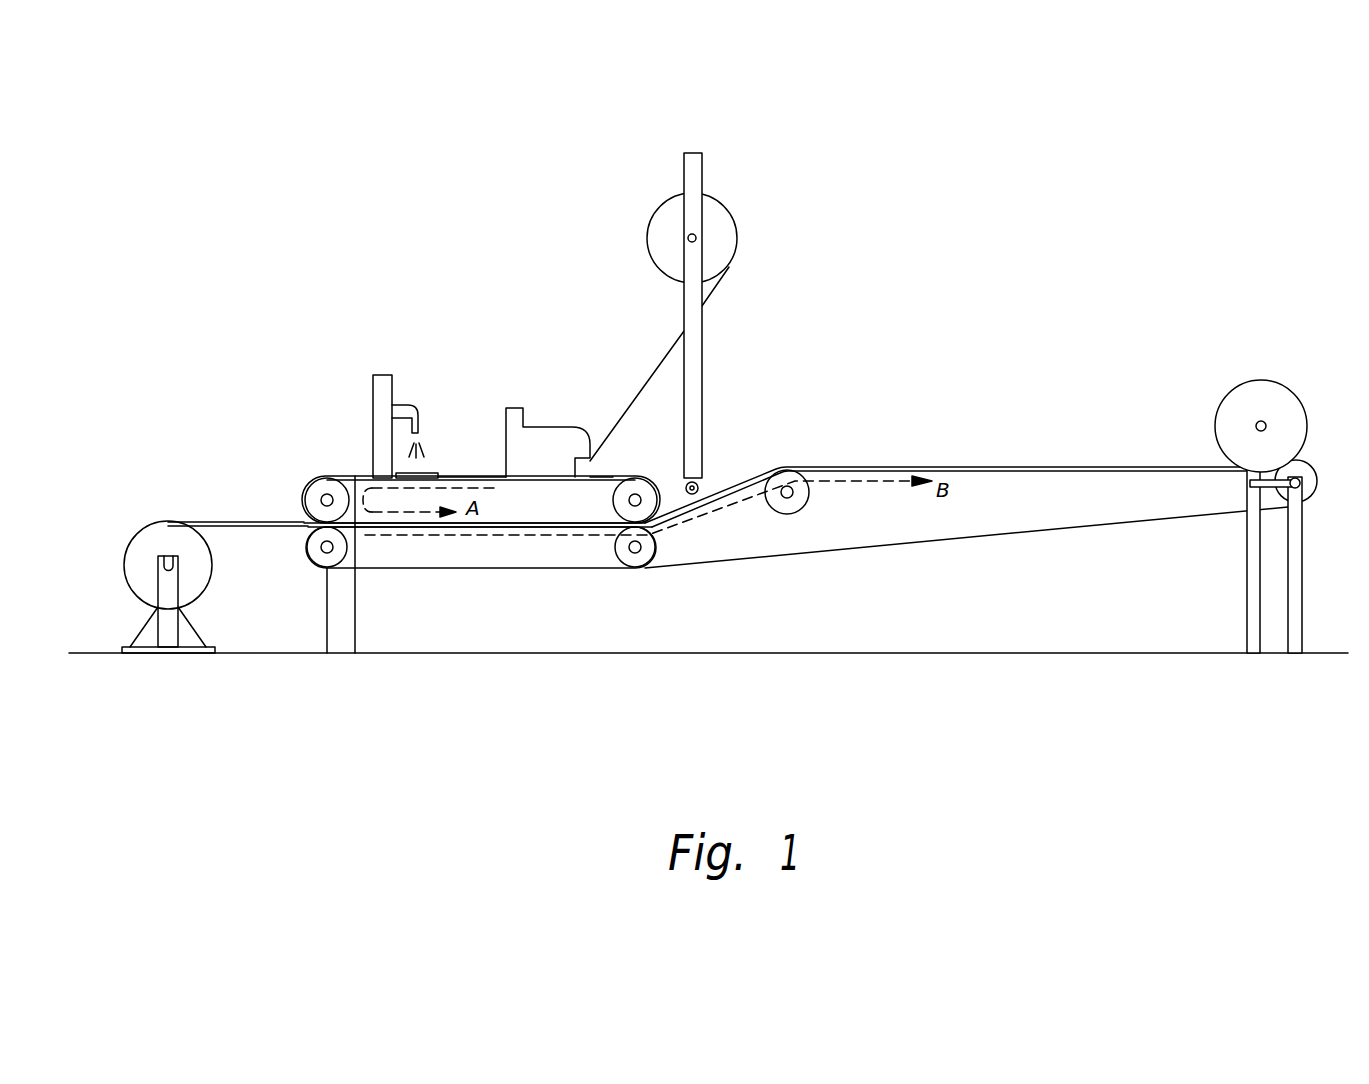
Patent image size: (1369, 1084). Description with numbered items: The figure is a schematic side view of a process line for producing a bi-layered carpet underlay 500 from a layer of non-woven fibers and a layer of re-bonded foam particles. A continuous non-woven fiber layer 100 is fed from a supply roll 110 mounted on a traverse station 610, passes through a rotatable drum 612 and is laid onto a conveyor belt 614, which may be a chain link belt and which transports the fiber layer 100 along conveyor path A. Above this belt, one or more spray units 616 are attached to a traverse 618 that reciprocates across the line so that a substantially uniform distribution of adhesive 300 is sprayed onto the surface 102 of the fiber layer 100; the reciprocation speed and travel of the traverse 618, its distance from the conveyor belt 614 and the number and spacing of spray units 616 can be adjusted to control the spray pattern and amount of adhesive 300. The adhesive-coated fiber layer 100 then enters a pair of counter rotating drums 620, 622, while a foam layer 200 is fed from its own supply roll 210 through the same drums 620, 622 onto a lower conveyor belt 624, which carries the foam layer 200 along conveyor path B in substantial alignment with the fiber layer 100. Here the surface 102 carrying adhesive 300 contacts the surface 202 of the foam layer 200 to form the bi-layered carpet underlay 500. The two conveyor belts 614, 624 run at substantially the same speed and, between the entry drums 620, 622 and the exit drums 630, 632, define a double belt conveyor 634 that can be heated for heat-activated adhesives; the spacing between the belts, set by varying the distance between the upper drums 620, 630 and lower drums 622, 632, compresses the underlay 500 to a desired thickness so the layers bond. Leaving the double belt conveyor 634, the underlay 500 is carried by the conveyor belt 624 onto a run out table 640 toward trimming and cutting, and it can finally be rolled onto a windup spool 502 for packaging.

The non-woven fiber layer 100 is at (662, 350).
The surface of non-woven fiber layer 102 is at (470, 474).
The supply roll 110 is at (737, 235).
The foam layer 200 is at (203, 518).
The surface of foam layer 202 is at (360, 527).
The supply roll 210 is at (130, 522).
The adhesive 300 is at (433, 470).
The bi-layered carpet underlay 500 is at (1185, 465).
The windup spool 502 is at (1267, 380).
The traverse station 610 is at (705, 166).
The rotatable drum 612 is at (550, 427).
The conveyor belt 614 is at (605, 477).
The spray unit 616 is at (408, 403).
The traverse 618 is at (373, 391).
The counter rotating drum 620 is at (303, 492).
The counter rotating drum 622 is at (305, 547).
The conveyor belt 624 is at (580, 568).
The counter rotating drum 630 is at (658, 490).
The counter rotating drum 632 is at (675, 568).
The double belt conveyor 634 is at (505, 523).
The run out table 640 is at (1018, 465).